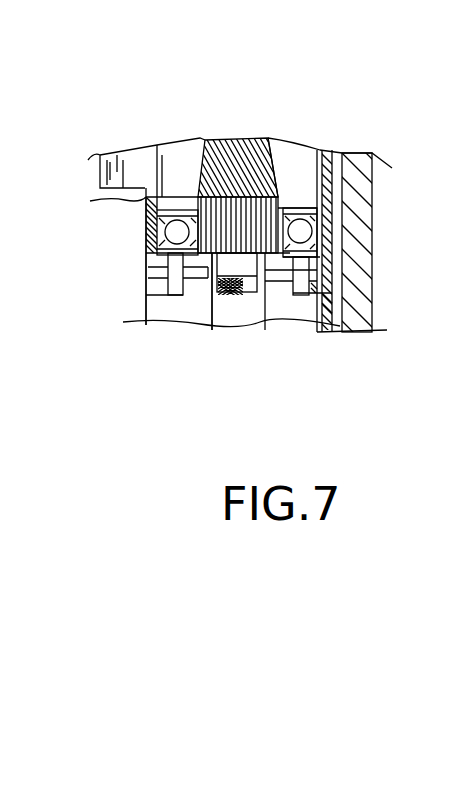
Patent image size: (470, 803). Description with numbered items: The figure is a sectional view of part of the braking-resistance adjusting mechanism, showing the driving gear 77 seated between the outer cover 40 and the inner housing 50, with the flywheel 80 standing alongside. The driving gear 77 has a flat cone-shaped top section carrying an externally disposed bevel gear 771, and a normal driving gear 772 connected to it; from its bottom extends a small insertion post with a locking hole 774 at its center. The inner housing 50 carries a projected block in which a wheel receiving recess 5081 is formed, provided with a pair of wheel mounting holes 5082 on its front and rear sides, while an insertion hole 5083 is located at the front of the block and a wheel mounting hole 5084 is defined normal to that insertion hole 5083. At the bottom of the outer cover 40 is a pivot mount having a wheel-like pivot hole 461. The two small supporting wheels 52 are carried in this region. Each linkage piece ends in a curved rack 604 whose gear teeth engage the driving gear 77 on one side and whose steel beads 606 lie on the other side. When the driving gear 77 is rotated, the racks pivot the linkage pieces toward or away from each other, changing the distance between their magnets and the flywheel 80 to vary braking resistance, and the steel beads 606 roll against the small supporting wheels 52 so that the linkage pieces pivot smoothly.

The bevel gear 771 is at (215, 137).
The locking hole 774 is at (265, 137).
The driving gear 77 is at (290, 158).
The normal driving gear 772 is at (320, 257).
The curved rack 604 is at (157, 209).
The steel beads 606 is at (177, 232).
The outer cover 40 is at (140, 265).
The wheel-like pivot hole 461 is at (158, 282).
The inner housing 50 is at (342, 216).
The flywheel 80 is at (385, 300).
The small supporting wheels 52 is at (158, 295).
The wheel mounting hole 5084 is at (200, 266).
The insertion hole 5083 is at (212, 330).
The wheel mounting holes 5082 is at (265, 330).
The wheel receiving recess 5081 is at (331, 314).